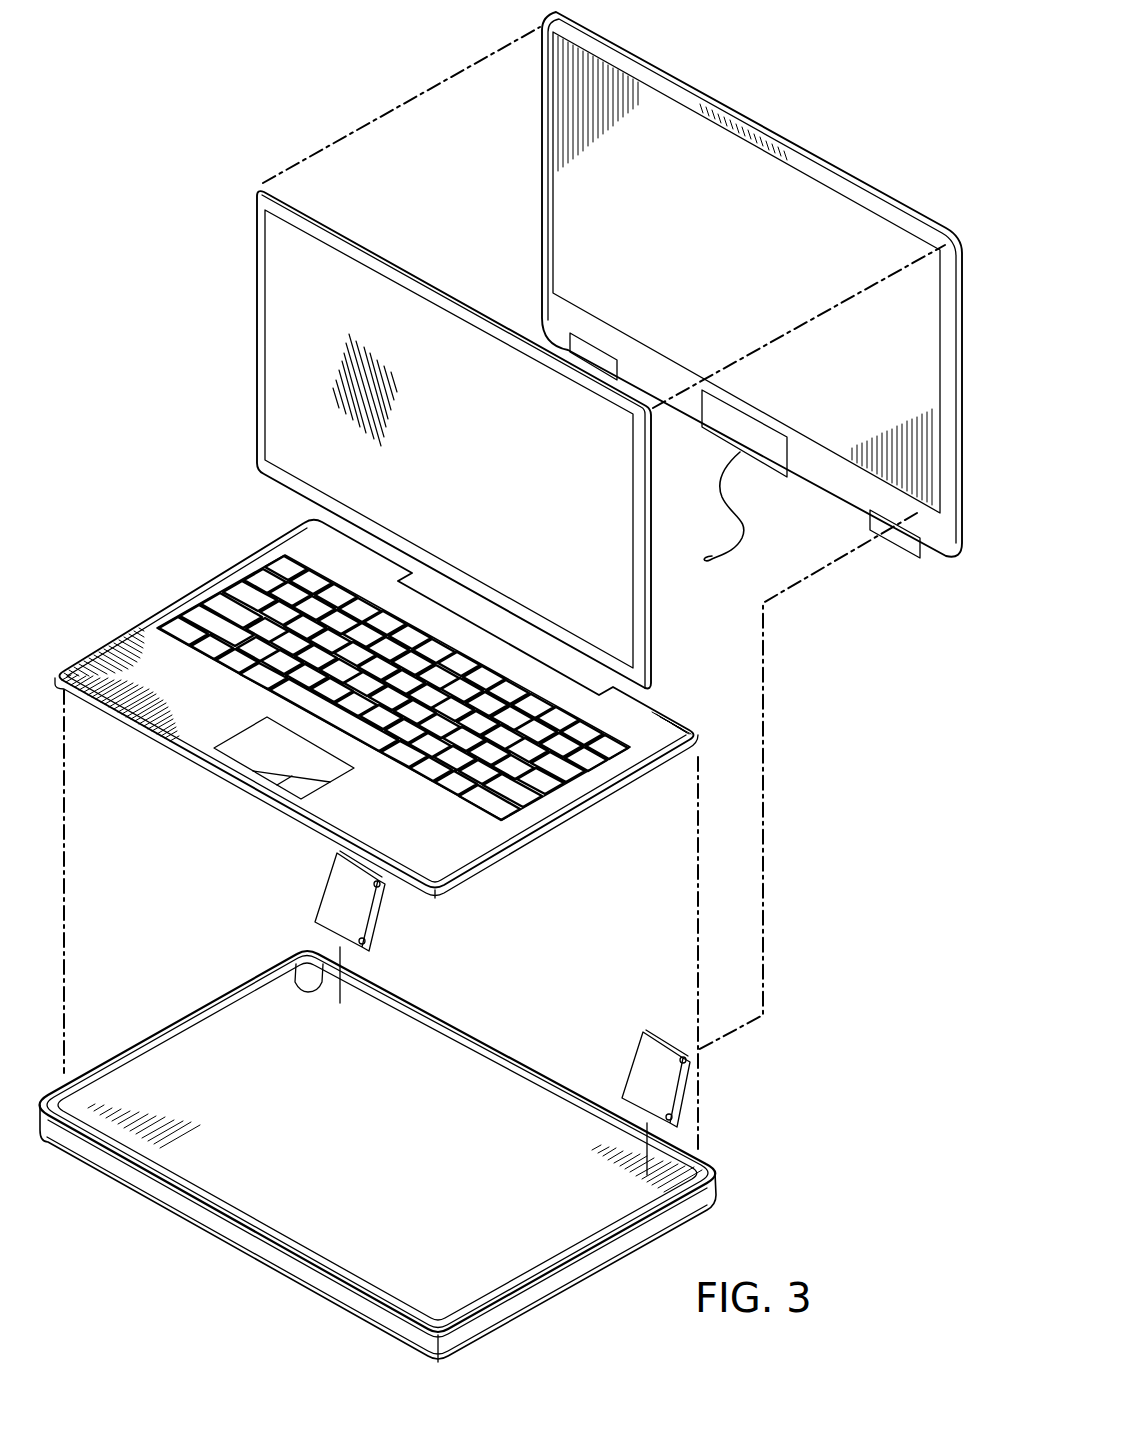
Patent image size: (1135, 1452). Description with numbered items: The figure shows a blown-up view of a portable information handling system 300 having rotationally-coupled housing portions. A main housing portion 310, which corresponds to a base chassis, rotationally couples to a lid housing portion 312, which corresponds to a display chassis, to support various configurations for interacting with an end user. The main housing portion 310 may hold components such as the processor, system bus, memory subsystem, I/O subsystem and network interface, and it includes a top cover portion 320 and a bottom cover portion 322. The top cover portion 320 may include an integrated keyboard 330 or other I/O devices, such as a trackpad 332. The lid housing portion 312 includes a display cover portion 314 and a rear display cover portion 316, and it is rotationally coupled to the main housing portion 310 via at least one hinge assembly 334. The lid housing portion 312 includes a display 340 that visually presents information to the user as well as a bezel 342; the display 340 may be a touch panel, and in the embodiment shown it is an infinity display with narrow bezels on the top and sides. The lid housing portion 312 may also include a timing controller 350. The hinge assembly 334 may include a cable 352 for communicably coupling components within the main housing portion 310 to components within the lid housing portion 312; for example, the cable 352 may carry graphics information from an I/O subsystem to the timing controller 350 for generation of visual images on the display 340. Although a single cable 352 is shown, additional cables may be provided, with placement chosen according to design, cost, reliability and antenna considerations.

The portable information handling system 300 is at (178, 139).
The main housing portion 310 is at (101, 579).
The lid housing portion 312 is at (347, 91).
The display cover portion 314 is at (258, 396).
The rear display cover portion 316 is at (755, 115).
The top cover portion 320 is at (150, 738).
The bottom cover portion 322 is at (245, 1248).
The integrated keyboard 330 is at (210, 600).
The trackpad 332 is at (268, 752).
The hinge assembly 334 is at (322, 890).
The display 340 is at (503, 502).
The bezel 342 is at (258, 305).
The timing controller (TCON) 350 is at (765, 436).
The cable 352 is at (755, 521).